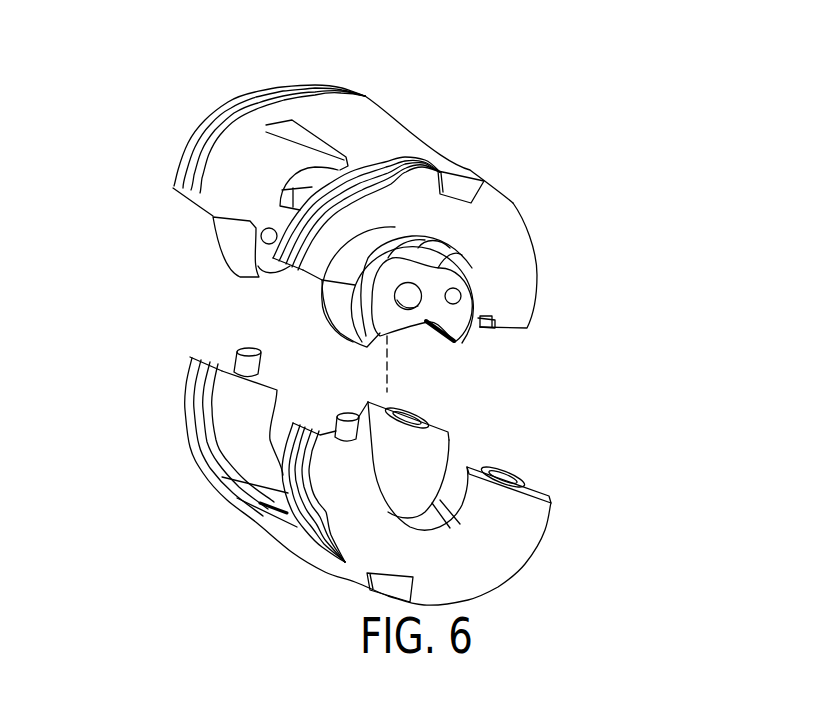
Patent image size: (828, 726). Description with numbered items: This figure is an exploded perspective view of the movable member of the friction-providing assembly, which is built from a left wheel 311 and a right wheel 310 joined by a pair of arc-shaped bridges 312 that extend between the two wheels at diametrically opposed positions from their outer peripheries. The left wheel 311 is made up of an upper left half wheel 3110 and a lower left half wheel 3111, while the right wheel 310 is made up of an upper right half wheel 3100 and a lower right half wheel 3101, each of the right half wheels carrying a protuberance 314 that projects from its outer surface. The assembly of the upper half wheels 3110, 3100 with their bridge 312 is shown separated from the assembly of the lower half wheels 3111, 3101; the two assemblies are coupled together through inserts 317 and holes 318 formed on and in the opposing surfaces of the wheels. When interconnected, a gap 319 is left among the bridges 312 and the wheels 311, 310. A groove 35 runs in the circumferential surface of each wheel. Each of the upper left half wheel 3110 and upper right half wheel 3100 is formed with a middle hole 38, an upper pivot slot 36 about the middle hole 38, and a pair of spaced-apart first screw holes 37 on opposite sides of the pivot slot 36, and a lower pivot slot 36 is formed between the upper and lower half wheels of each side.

The left wheel 311 is at (303, 54).
The gap 319 is at (275, 148).
The upper left half wheel 3110 is at (247, 167).
The groove 35 is at (185, 186).
The arc-shaped bridge 312 is at (393, 133).
The protuberance 314 is at (460, 183).
The right wheel 310 is at (513, 203).
The upper right half wheel 3100 is at (510, 243).
The pivot slot 36 is at (410, 210).
The first screw hole 37 is at (457, 298).
The middle hole 38 is at (407, 300).
The insert 317 is at (238, 358).
The lower left half wheel 3111 is at (230, 427).
The hole 318 is at (497, 475).
The lower right half wheel 3101 is at (500, 547).